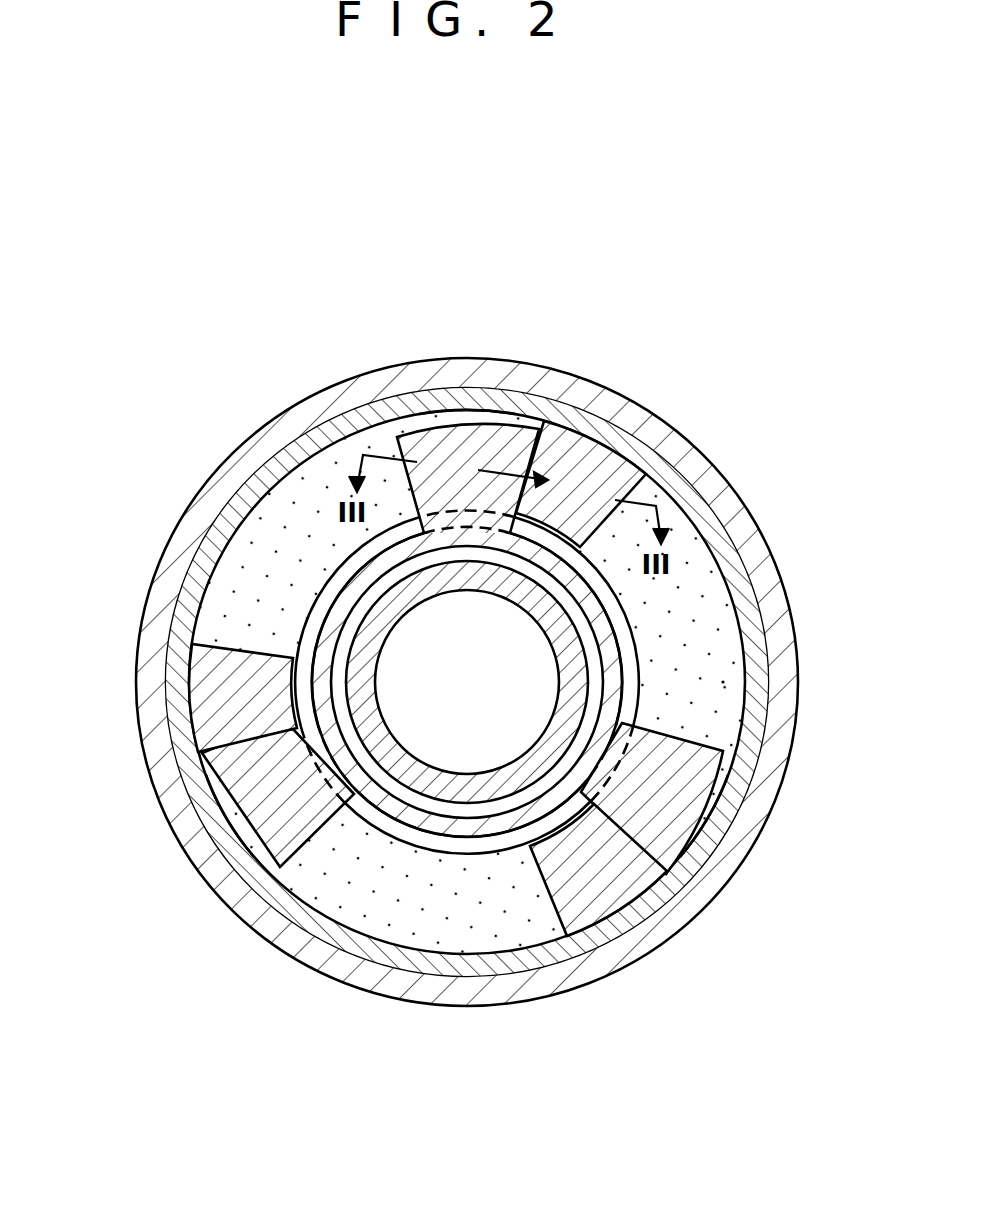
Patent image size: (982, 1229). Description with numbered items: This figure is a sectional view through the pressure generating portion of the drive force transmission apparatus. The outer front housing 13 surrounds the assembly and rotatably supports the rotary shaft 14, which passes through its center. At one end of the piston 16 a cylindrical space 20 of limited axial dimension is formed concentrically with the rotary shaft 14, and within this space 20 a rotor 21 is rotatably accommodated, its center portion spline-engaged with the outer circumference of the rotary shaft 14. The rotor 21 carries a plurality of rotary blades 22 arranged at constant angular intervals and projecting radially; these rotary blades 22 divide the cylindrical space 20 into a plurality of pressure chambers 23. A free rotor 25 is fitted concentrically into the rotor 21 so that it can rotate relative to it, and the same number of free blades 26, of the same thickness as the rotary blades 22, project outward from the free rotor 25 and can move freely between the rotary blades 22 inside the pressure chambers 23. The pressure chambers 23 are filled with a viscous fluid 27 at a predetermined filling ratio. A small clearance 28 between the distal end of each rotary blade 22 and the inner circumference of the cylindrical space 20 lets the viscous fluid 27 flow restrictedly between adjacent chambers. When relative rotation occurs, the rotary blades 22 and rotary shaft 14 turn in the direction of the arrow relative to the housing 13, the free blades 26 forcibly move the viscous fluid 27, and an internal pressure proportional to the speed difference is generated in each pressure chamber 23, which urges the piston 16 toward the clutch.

The front housing 13 is at (312, 412).
The rotary shaft 14 is at (478, 592).
The piston 16 is at (688, 478).
The cylindrical space 20 is at (312, 892).
The rotor 21 is at (352, 578).
The rotary blades 22 is at (470, 435).
The pressure chambers 23 is at (235, 565).
The free rotor 25 is at (473, 842).
The free blades 26 is at (587, 443).
The viscous fluid 27 is at (723, 682).
The clearance 28 is at (438, 412).